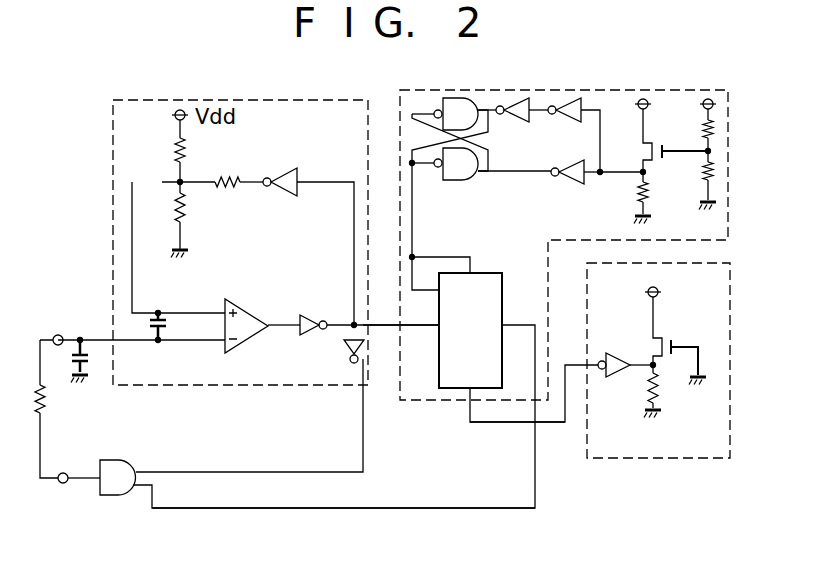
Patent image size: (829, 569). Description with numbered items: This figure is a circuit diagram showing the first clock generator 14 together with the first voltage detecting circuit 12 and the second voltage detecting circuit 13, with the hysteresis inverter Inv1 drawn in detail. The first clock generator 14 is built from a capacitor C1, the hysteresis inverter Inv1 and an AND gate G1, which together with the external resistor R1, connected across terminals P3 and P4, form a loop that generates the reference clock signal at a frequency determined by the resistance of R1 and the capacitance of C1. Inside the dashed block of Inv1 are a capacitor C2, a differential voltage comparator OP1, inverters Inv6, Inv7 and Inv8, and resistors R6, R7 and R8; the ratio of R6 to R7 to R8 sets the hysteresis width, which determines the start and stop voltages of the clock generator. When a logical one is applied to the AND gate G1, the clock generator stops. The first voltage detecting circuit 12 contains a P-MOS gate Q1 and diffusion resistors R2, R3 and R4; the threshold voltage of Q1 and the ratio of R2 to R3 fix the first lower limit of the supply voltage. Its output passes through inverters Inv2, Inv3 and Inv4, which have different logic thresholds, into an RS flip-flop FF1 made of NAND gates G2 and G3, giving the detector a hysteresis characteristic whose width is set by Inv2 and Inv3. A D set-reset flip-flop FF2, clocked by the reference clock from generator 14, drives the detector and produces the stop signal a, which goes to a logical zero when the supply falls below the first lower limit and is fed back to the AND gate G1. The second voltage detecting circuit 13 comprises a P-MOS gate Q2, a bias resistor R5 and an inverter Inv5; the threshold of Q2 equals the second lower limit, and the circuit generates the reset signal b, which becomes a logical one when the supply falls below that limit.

The hysteresis inverter Inv1 is at (113, 161).
The resistor R7 is at (174, 155).
The resistor R8 is at (187, 203).
The resistor R6 is at (226, 175).
The inverter Inv7 is at (297, 170).
The capacitor C2 is at (165, 321).
The capacitor C1 is at (98, 357).
The differential voltage comparator OP1 is at (240, 306).
The inverter Inv6 is at (306, 315).
The inverter Inv8 is at (344, 353).
The terminal P3 is at (60, 334).
The external resistor R1 is at (47, 402).
The terminal P4 is at (64, 472).
The AND gate G1 is at (134, 462).
The first clock generator 14 is at (218, 516).
The stop signal a is at (452, 506).
The reset signal b is at (553, 424).
The first voltage detecting circuit 12 is at (730, 146).
The D set-reset flip-flop FF2 is at (483, 273).
The RS flip-flop FF1 is at (431, 175).
The NAND gate G3 is at (457, 97).
The NAND gate G2 is at (476, 182).
The inverter Inv4 is at (516, 98).
The inverter Inv3 is at (576, 98).
The inverter Inv2 is at (566, 186).
The P-MOS gate Q1 is at (654, 142).
The diffusion resistor R4 is at (650, 186).
The diffusion resistor R2 is at (714, 133).
The diffusion resistor R3 is at (714, 172).
The second voltage detecting circuit 13 is at (731, 304).
The inverter Inv5 is at (612, 351).
The P-MOS gate Q2 is at (665, 336).
The bias resistor R5 is at (660, 390).